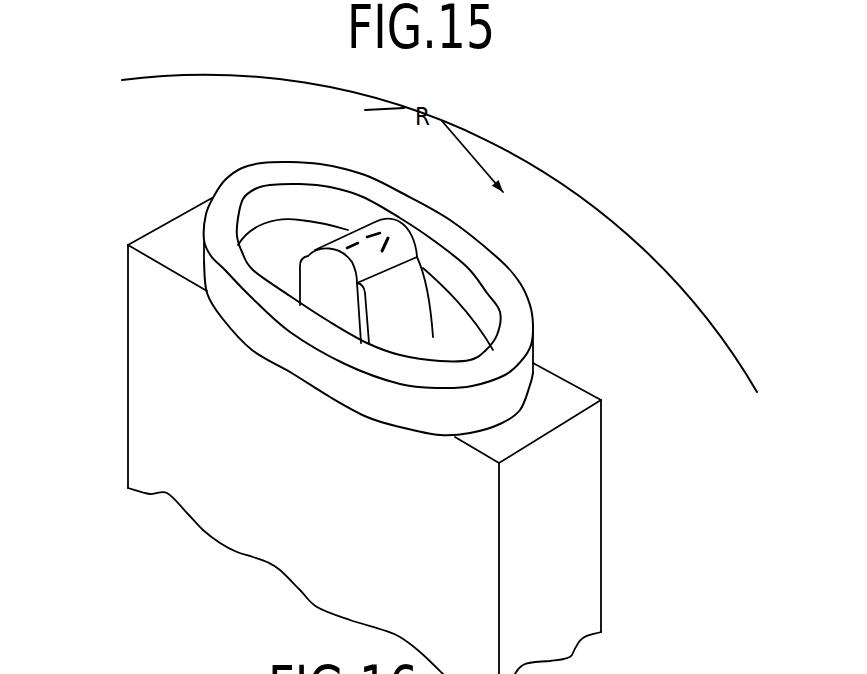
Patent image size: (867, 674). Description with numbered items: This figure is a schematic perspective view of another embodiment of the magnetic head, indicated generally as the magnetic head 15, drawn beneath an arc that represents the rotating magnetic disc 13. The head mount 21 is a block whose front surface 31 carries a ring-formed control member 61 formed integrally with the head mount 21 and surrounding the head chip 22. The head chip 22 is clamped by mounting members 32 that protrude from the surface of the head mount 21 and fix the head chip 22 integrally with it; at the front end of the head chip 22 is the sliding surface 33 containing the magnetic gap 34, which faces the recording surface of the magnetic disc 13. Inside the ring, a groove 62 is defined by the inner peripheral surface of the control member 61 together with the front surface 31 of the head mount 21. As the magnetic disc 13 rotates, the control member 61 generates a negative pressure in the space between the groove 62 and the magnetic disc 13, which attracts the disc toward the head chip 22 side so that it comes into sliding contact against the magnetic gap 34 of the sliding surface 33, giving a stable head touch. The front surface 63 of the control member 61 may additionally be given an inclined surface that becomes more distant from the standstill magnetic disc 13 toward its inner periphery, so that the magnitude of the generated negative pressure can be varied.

The magnetic disc 13 is at (697, 295).
The tool holder assembly 15 is at (108, 337).
The head mount 21 is at (560, 540).
The front surface 31 is at (552, 403).
The ring-formed control member 61 is at (210, 256).
The front surface of the control member 63 is at (505, 343).
The groove 62 is at (270, 238).
The head chip 22 is at (323, 283).
The mounting members 32 is at (407, 296).
The sliding surface 33 is at (387, 238).
The magnetic gap 34 is at (356, 245).